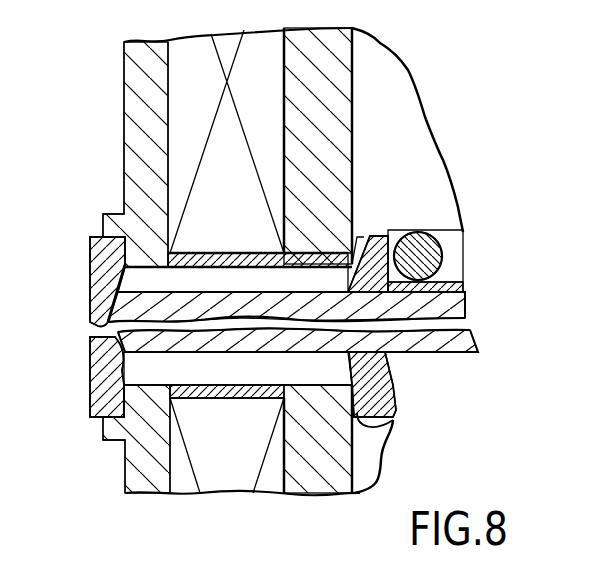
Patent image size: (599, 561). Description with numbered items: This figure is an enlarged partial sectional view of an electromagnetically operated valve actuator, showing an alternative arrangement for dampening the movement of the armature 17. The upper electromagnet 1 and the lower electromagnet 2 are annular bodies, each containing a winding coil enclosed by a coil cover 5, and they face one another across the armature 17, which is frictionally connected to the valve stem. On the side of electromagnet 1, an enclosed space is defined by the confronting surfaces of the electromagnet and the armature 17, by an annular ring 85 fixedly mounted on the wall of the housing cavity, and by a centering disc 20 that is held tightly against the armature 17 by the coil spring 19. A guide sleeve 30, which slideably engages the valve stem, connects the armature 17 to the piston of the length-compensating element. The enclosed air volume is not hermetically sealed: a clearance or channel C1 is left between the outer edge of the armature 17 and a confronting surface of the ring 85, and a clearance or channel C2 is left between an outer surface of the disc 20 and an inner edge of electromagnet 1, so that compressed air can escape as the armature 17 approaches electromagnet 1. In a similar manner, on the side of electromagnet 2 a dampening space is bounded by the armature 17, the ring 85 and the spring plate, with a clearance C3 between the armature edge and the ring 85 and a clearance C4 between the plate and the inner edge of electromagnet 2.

The electromagnet 1 is at (140, 118).
The electromagnet 2 is at (127, 469).
The coil cover 5 is at (232, 252).
The annular ring 85 is at (110, 261).
The armature 17 is at (467, 310).
The coil spring 19 is at (440, 258).
The centering disc 20 is at (377, 236).
The guide sleeve 30 is at (378, 378).
The clearance or channel C1 is at (107, 325).
The clearance or channel C2 is at (357, 232).
The clearance or channel C3 is at (110, 375).
The clearance or channel C4 is at (385, 425).